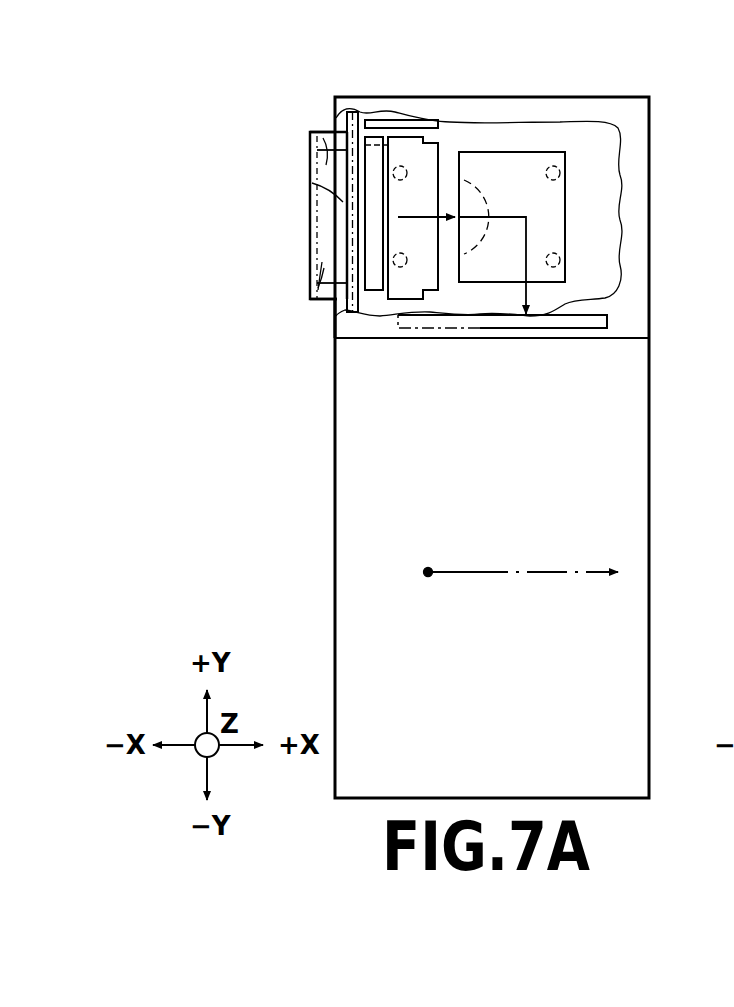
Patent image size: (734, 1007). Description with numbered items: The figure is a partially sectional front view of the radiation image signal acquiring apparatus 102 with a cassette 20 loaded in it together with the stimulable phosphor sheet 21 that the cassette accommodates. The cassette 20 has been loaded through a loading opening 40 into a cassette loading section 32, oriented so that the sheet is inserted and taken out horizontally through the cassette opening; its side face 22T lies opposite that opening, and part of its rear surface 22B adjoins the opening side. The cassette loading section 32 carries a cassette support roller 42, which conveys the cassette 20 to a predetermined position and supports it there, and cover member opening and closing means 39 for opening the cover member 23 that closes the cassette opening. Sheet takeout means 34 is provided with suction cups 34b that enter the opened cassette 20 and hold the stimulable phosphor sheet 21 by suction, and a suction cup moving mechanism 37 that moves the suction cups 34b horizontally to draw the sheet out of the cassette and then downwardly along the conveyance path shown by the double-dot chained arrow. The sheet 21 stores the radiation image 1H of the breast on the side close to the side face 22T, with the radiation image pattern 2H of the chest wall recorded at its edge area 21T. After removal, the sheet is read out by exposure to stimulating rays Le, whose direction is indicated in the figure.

The radiation image signal acquiring apparatus 102 is at (636, 52).
The cassette 20 is at (326, 128).
The stimulable phosphor sheet 21 is at (310, 131).
The edge area of the stimulable phosphor sheet 21T is at (318, 222).
The side face of the cassette 22T is at (310, 165).
The rear surface of the cassette 22B is at (308, 300).
The cover member 23 is at (377, 167).
The radiation image of the breast 1H is at (312, 183).
The radiation image pattern representing the chest wall 2H is at (310, 258).
The cassette loading section 32 is at (654, 203).
The sheet takeout means 34 is at (521, 139).
The suction cups 34b is at (558, 179).
The suction cup moving mechanism 37 is at (609, 320).
The cover member opening and closing means 39 is at (424, 121).
The loading opening 40 is at (325, 308).
The cassette support roller 42 is at (349, 112).
The stimulating rays Le is at (548, 572).